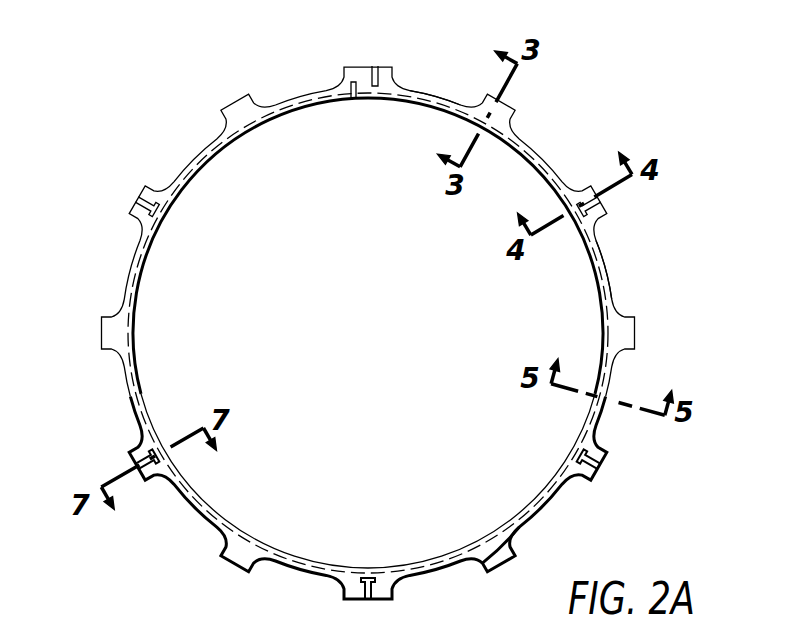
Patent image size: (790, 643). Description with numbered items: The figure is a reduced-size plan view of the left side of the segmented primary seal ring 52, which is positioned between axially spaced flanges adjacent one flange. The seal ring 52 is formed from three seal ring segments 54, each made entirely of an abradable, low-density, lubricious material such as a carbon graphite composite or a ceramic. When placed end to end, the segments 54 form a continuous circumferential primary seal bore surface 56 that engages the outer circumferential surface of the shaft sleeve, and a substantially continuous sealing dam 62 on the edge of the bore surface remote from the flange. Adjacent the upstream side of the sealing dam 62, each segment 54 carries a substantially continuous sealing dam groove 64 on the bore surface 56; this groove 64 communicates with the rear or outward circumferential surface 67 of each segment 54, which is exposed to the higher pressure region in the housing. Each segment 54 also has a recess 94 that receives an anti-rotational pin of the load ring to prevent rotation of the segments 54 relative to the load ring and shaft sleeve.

The segmented primary seal ring 52 is at (274, 97).
The seal ring segment 54 is at (545, 168).
The primary seal bore surface 56 is at (600, 322).
The sealing dam 62 is at (470, 548).
The sealing dam groove 64 is at (533, 500).
The outward circumferential surface 67 is at (432, 94).
The recess 94 is at (598, 205).